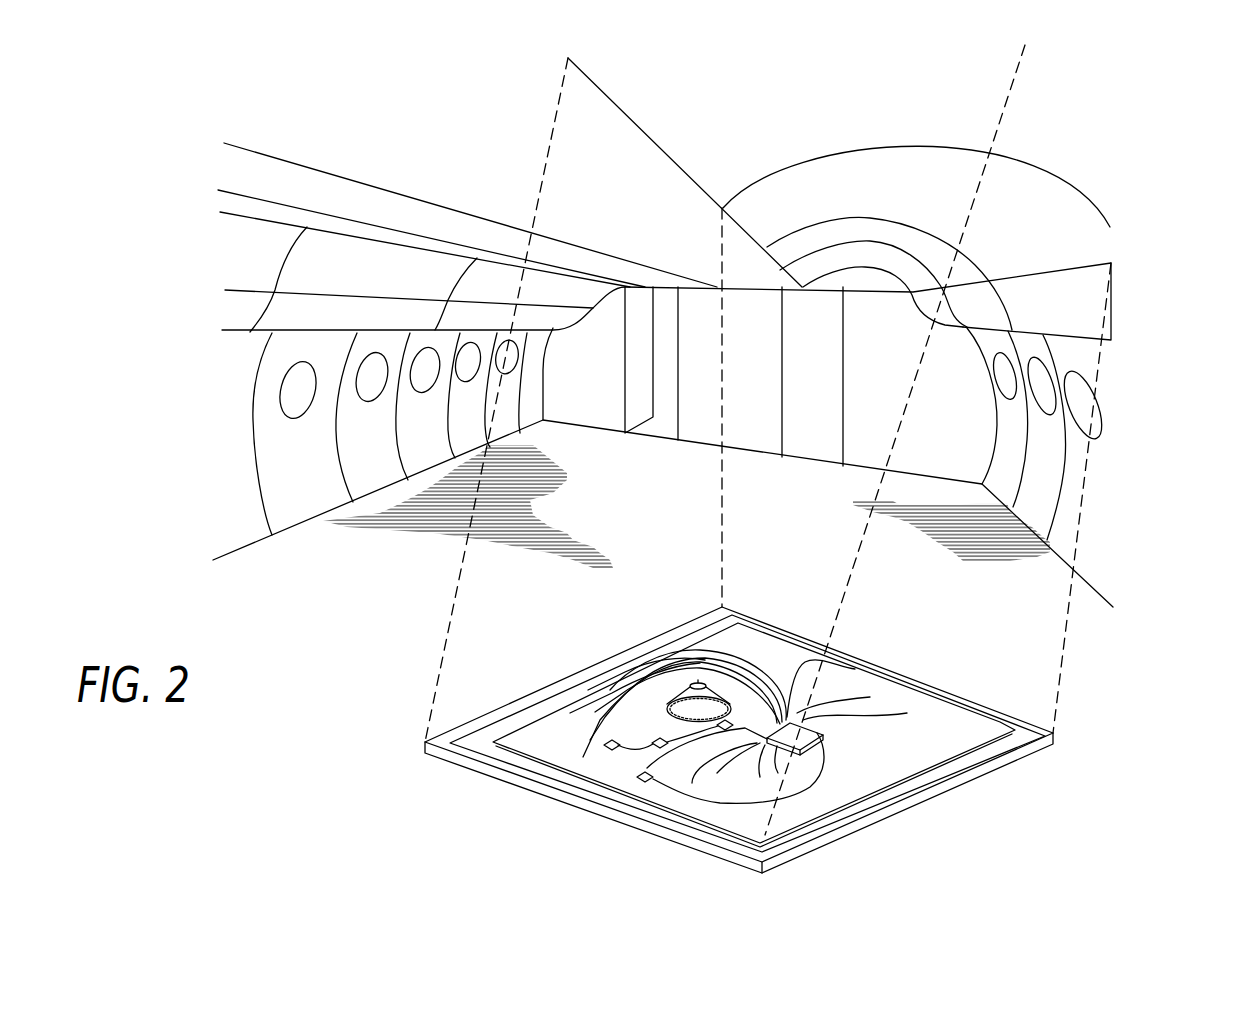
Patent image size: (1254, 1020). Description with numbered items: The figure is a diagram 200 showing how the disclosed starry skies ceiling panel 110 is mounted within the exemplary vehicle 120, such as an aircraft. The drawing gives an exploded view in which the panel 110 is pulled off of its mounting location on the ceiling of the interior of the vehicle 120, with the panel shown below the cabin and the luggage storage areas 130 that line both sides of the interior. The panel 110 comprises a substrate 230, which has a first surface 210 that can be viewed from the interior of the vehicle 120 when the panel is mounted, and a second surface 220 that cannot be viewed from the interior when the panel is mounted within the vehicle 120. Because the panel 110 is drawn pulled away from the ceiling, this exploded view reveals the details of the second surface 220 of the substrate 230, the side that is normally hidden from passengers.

The starry skies ceiling panel 110 is at (900, 825).
The vehicle 120 is at (418, 120).
The luggage storage areas 130 is at (322, 261).
The diagram 200 is at (312, 730).
The first surface 210 is at (602, 837).
The second surface 220 is at (763, 648).
The substrate 230 is at (1085, 733).